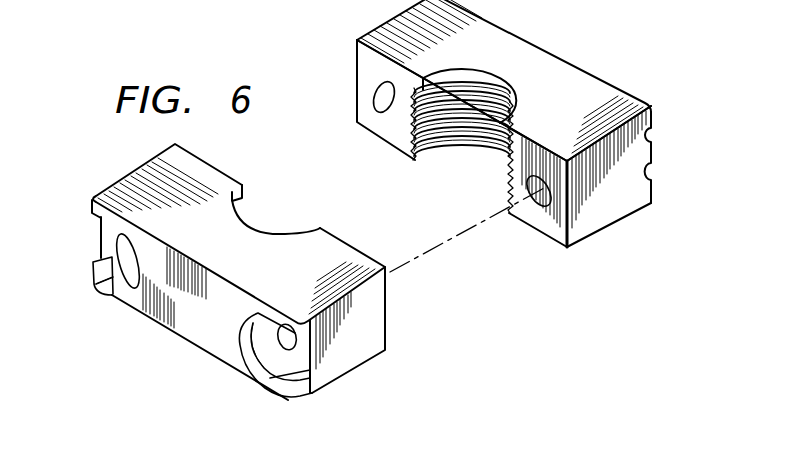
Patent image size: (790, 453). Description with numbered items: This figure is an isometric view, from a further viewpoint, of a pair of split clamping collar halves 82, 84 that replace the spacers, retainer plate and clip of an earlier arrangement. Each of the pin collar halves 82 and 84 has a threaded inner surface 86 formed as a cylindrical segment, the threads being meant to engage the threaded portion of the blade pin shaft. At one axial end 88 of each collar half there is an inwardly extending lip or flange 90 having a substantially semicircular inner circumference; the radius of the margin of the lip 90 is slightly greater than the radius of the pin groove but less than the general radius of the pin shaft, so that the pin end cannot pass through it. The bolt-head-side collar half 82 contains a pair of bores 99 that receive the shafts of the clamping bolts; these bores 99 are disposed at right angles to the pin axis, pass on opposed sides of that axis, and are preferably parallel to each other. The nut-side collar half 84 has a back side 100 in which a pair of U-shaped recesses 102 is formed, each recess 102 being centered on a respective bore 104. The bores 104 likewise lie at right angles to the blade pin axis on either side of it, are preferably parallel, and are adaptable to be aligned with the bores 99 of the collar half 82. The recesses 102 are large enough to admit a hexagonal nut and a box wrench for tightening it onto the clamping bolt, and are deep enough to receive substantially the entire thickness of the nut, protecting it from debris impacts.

The collar half 82 is at (480, 140).
The collar half 84 is at (343, 250).
The threaded inner surface 86 is at (462, 150).
The axial end 88 is at (559, 108).
The inwardly extending lip 90 is at (473, 80).
The bore 99 is at (376, 97).
The back side 100 is at (204, 294).
The U-shaped recess 102 is at (110, 240).
The bore 104 is at (113, 290).